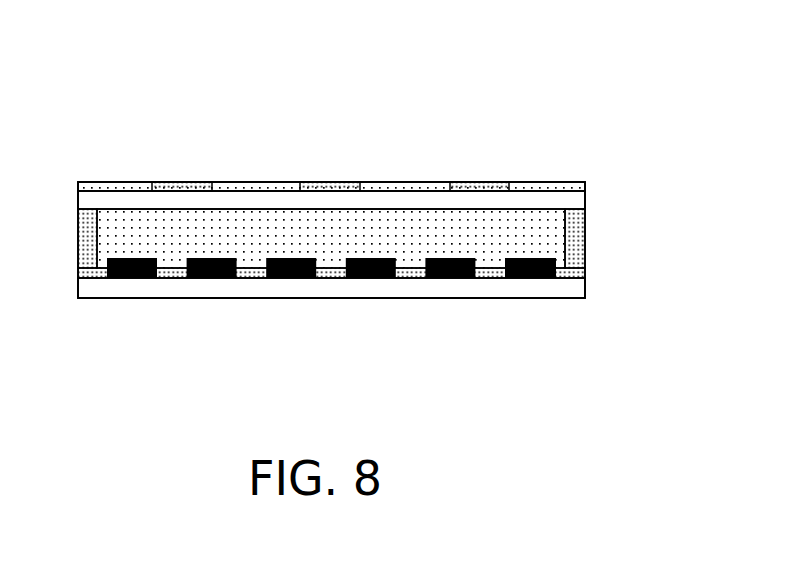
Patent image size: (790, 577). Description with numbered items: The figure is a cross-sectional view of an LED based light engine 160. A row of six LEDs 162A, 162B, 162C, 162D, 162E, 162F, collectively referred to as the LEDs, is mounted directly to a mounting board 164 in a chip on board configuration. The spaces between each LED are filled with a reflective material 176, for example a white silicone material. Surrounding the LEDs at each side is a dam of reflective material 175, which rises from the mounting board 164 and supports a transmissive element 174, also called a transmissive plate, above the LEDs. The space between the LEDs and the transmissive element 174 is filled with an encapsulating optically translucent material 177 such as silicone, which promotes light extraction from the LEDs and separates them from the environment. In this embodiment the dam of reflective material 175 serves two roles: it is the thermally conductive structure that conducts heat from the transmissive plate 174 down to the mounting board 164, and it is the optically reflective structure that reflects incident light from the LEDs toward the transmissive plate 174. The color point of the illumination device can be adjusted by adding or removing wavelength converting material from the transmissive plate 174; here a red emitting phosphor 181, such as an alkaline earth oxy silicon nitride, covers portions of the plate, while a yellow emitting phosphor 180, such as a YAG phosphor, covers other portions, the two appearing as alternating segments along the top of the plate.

The LED based light engine 160 is at (562, 88).
The LED 162A is at (137, 278).
The LED 162B is at (210, 278).
The LED 162C is at (287, 278).
The LED 162D is at (367, 278).
The LED 162E is at (446, 278).
The LED 162F is at (526, 278).
The mounting board 164 is at (93, 285).
The transmissive element 174 is at (88, 200).
The dam of reflective material 175 is at (84, 263).
The reflective material 176 is at (177, 270).
The encapsulating optically translucent material 177 is at (542, 233).
The yellow emitting phosphor 180 is at (182, 183).
The red emitting phosphor 181 is at (250, 187).